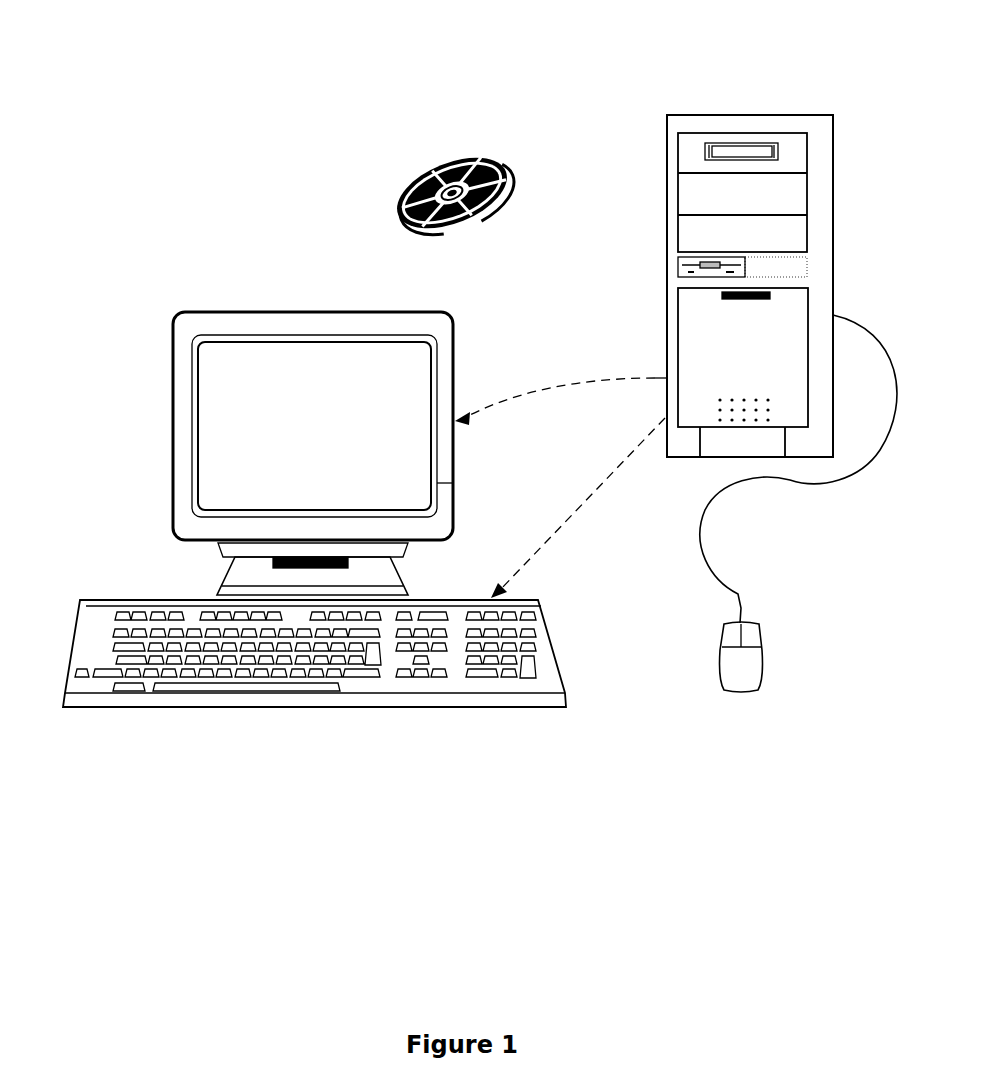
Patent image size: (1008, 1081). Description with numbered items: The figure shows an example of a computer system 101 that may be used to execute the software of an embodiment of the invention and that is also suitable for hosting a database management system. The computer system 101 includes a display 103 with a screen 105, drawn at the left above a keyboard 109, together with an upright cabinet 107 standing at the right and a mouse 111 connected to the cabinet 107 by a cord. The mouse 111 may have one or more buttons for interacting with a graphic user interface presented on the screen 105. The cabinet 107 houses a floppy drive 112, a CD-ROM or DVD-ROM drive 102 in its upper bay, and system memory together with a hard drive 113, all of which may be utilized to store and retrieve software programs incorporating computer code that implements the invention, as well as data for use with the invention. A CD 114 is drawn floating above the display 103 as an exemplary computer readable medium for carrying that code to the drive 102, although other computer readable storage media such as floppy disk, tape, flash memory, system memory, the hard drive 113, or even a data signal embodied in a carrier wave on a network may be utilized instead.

The computer system 101 is at (204, 111).
The CD-ROM or DVD-ROM drive 102 is at (749, 136).
The display 103 is at (455, 371).
The screen 105 is at (207, 376).
The cabinet 107 is at (835, 165).
The keyboard 109 is at (175, 705).
The mouse 111 is at (748, 660).
The floppy drive 112 is at (682, 262).
The hard drive 113 is at (755, 185).
The CD 114 is at (422, 172).